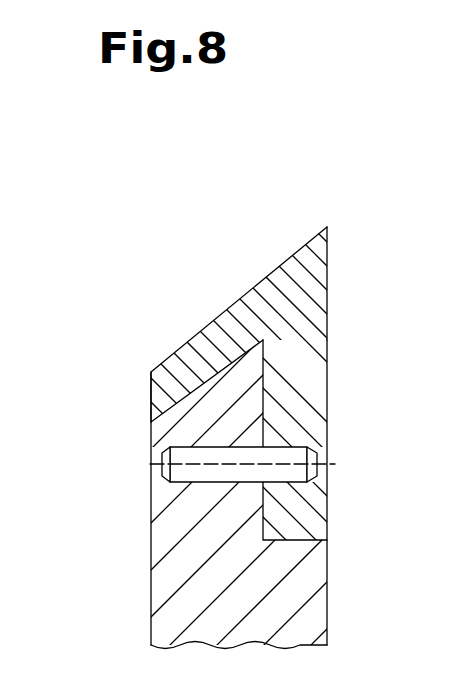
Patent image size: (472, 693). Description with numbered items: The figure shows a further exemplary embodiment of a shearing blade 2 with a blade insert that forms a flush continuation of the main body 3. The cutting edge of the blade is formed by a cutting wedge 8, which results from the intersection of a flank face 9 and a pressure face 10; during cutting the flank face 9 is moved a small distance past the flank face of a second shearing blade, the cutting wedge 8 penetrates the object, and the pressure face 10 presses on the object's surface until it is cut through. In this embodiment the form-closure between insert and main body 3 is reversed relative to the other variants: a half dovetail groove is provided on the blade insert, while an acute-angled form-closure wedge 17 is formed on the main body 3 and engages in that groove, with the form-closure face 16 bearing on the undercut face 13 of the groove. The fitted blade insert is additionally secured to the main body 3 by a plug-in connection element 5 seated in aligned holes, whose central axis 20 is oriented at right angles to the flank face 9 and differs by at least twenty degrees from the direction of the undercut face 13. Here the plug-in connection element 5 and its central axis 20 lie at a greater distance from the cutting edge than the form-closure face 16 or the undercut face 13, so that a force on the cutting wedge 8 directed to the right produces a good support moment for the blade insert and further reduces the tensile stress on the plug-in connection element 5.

The shearing blade 2 is at (296, 203).
The main body 3 is at (150, 618).
The plug-in connection element 5 is at (143, 482).
The cutting wedge 8 is at (331, 212).
The flank face 9 is at (332, 260).
The pressure face 10 is at (272, 272).
The undercut face 13 is at (207, 340).
The form-closure face 16 is at (200, 400).
The form-closure wedge 17 is at (258, 390).
The central axis 20 is at (150, 461).